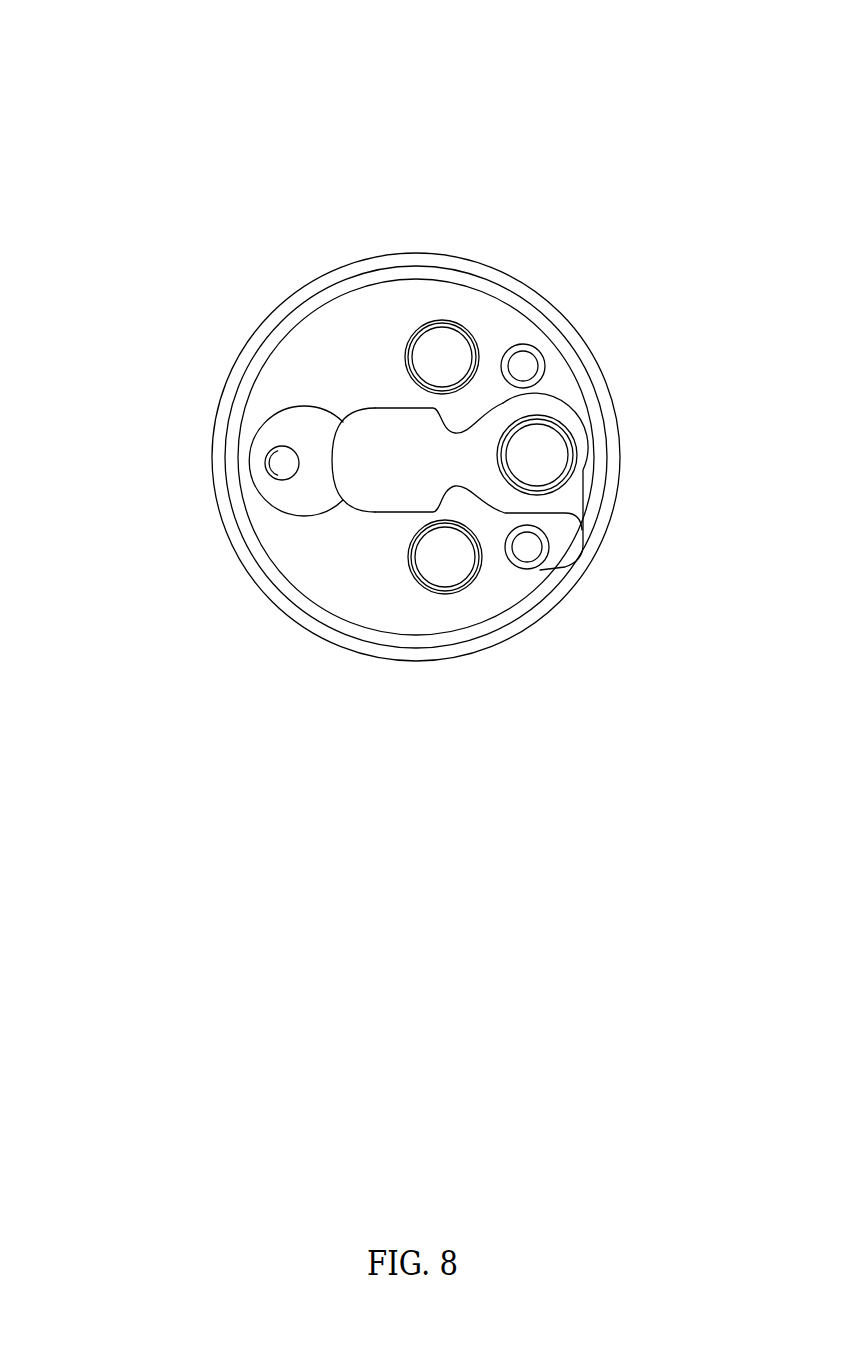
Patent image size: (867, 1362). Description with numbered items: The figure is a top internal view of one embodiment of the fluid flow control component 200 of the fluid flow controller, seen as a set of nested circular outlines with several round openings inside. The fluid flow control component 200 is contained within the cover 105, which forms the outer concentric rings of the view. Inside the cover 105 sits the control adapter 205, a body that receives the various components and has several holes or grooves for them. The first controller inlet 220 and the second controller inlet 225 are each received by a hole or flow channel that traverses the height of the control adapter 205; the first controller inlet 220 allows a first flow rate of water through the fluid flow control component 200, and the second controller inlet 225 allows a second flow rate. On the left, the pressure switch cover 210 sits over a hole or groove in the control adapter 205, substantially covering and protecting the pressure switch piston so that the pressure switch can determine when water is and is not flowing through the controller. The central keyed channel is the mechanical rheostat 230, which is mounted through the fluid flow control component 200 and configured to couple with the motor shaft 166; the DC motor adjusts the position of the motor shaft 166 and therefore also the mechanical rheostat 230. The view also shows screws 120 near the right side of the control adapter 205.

The fluid flow control component 200 is at (385, 176).
The cover 105 is at (306, 275).
The control adapter 205 is at (345, 565).
The pressure switch cover 210 is at (288, 466).
The second controller inlet 225 is at (450, 357).
The mechanical rheostat 230 is at (465, 467).
The motor shaft 166 is at (548, 453).
The screws 120 is at (527, 545).
The first controller inlet 220 is at (453, 572).